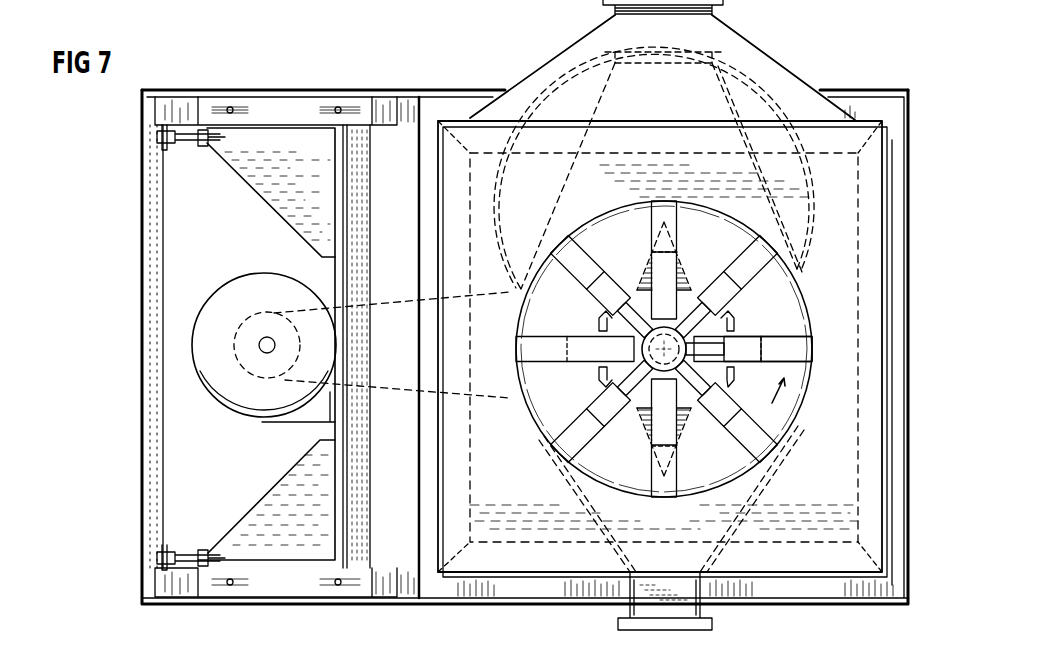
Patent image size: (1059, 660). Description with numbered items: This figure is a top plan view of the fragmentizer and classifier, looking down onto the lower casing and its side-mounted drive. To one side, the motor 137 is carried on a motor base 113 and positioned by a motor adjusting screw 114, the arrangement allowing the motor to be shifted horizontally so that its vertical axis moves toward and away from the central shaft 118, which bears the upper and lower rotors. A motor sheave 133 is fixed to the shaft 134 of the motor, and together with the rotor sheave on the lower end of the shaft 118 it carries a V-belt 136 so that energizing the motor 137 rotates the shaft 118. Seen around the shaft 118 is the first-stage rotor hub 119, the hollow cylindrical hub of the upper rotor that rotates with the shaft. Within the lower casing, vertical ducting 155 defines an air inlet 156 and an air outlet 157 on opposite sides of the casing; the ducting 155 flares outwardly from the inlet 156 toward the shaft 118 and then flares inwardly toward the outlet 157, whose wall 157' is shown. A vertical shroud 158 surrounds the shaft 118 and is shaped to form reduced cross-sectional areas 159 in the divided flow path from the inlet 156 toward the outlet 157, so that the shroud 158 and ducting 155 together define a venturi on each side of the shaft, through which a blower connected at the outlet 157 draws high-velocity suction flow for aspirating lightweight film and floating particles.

The motor base 113 is at (362, 494).
The motor adjusting screw 114 is at (185, 145).
The shaft 118 is at (608, 333).
The first-stage rotor hub 119 is at (601, 380).
The motor sheave 133 is at (247, 373).
The motor shaft 134 is at (260, 347).
The drive belt 136 is at (410, 395).
The motor 137 is at (242, 283).
The vertical ducting 155 is at (750, 498).
The air inlet 156 is at (690, 612).
The air outlet 157 is at (703, 48).
The inlet duct wall 157' is at (662, 63).
The vertical shroud 158 is at (687, 274).
The reduced cross-sectional areas 159 is at (788, 298).